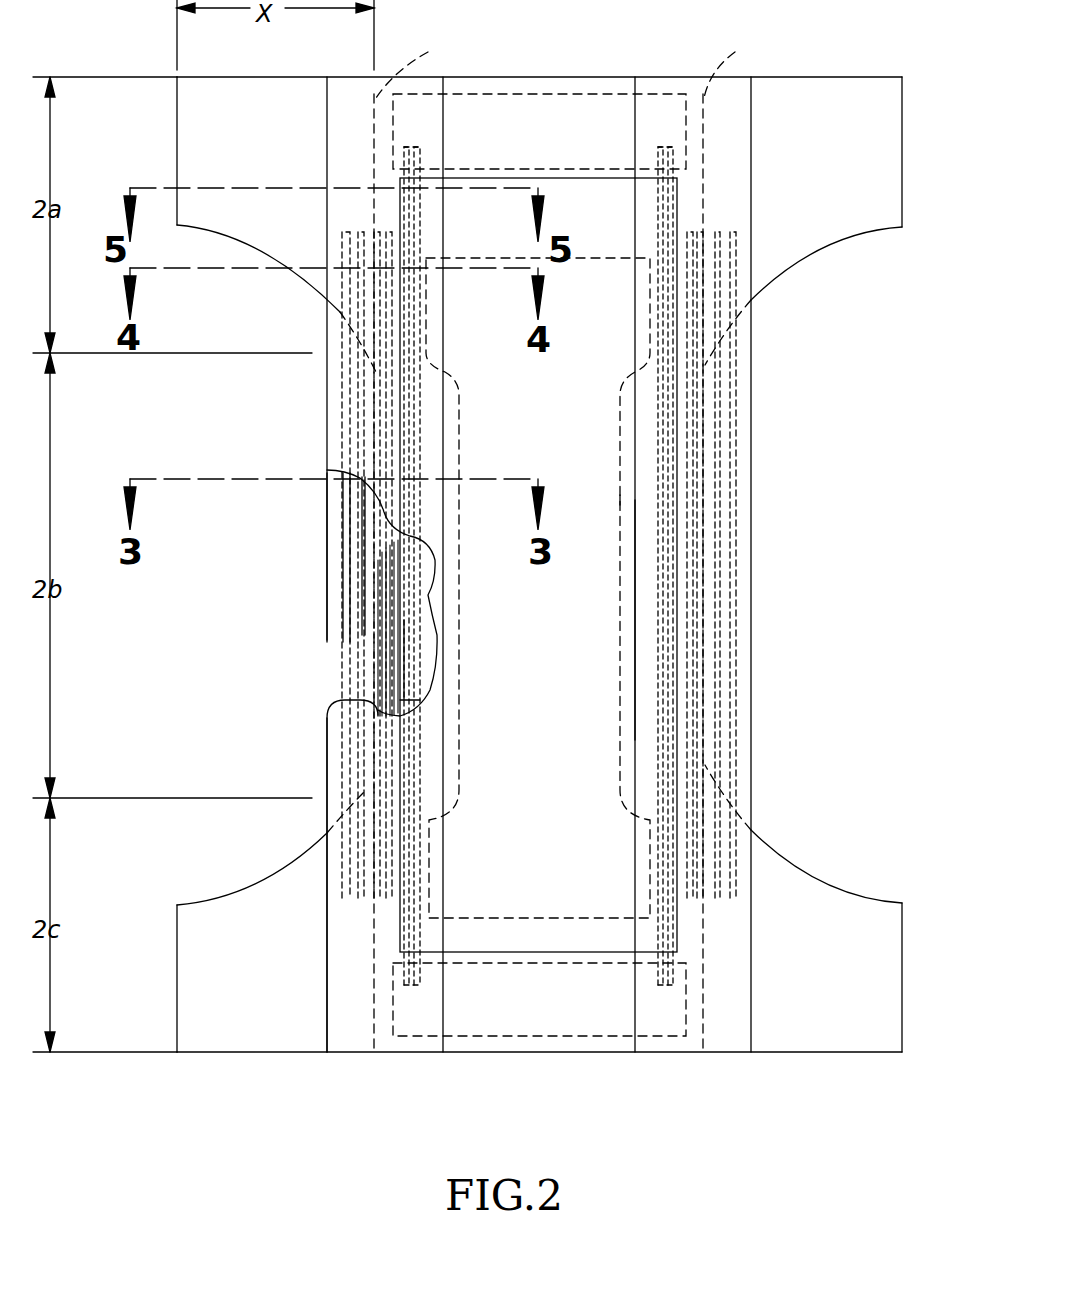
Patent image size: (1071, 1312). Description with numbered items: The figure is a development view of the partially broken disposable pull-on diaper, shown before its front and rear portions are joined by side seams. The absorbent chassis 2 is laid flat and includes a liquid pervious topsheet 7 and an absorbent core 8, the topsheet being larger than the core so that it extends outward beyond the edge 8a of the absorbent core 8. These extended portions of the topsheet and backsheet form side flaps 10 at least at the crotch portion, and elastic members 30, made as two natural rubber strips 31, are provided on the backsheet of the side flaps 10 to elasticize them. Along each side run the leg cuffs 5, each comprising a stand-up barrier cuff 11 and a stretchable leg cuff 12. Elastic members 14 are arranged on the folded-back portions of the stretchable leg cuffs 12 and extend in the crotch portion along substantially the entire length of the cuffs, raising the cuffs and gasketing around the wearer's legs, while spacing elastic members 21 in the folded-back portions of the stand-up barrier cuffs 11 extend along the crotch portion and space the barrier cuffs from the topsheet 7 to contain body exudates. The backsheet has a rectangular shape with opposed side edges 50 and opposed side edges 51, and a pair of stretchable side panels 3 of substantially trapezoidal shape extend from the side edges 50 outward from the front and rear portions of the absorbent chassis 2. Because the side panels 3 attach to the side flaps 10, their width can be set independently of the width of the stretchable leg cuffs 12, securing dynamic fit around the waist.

The absorbent chassis 2 is at (812, 568).
The stretchable side panels 3 is at (266, 120).
The leg cuffs 5 is at (760, 405).
The liquid pervious topsheet 7 is at (492, 420).
The absorbent core 8 is at (605, 742).
The edge of the absorbent core 8a is at (615, 498).
The side flaps 10 is at (377, 670).
The stand-up barrier cuff 11 is at (402, 745).
The stretchable leg cuff 12 is at (338, 553).
The elastic members 14 is at (364, 516).
The spacing elastic members 21 is at (660, 150).
The elastic members 30 is at (400, 702).
The natural rubber strips 31 is at (406, 650).
The opposed side edges of the backsheet 50 is at (378, 660).
The opposed side edges of the backsheet 51 is at (517, 77).